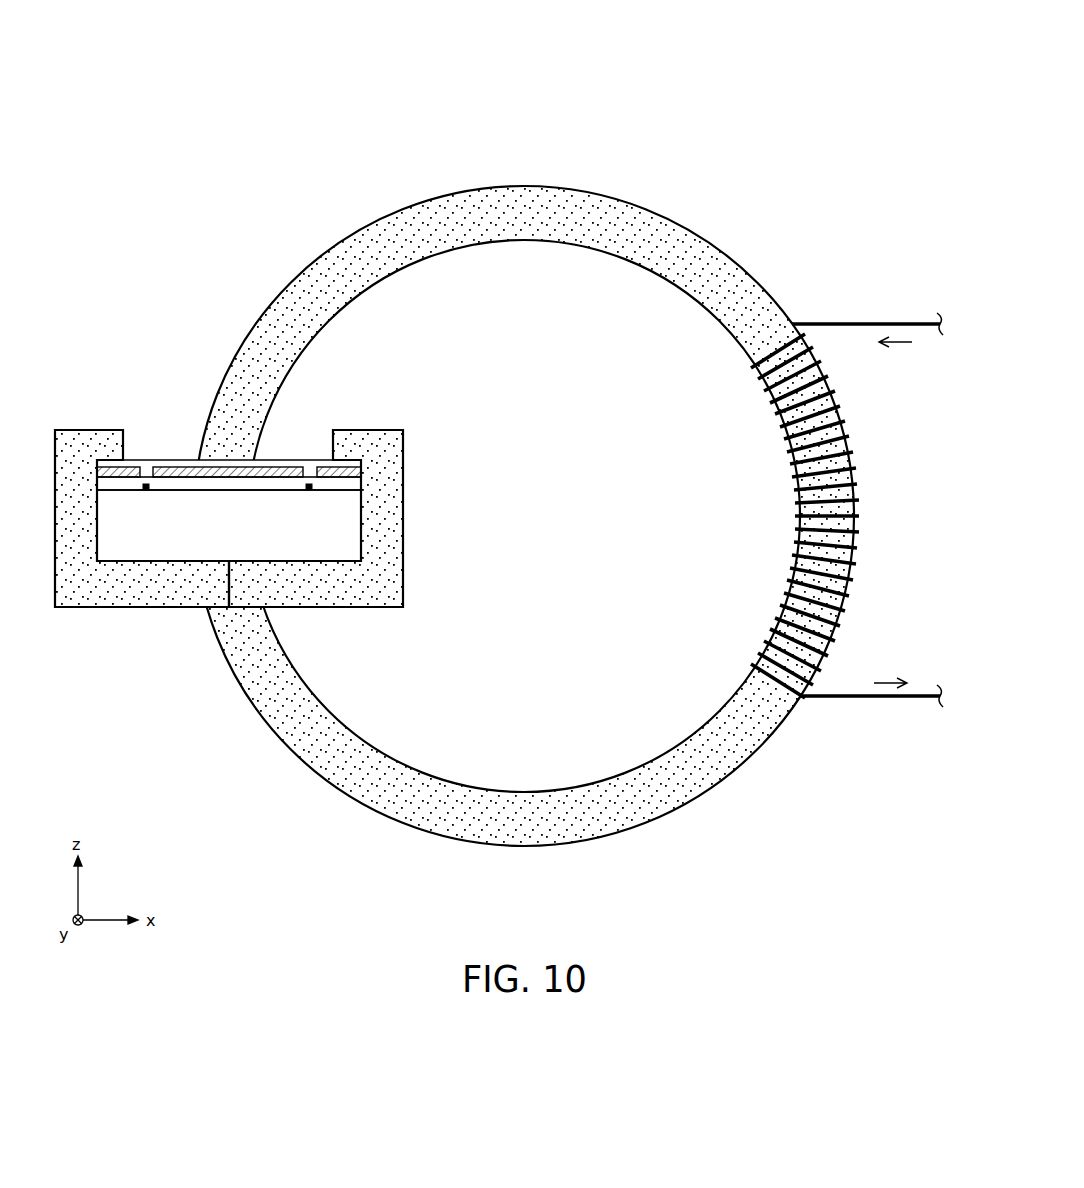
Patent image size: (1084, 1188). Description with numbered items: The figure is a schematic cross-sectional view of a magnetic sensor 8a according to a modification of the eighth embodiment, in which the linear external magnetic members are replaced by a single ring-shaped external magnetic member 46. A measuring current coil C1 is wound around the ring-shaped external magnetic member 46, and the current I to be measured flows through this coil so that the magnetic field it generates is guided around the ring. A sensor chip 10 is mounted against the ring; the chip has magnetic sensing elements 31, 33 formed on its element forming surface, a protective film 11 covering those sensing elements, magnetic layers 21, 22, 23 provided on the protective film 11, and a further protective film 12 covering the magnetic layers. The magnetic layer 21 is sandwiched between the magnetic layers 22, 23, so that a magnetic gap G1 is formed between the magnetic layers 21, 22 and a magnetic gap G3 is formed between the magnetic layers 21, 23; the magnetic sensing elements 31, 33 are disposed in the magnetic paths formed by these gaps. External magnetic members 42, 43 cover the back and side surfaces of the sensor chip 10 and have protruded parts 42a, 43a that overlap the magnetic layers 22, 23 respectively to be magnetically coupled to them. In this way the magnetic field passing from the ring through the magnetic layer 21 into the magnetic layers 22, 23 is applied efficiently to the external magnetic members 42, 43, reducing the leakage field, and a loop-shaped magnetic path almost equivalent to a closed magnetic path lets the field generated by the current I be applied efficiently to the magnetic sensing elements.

The magnetic sensor 8a is at (890, 36).
The sensor chip 10 is at (350, 527).
The protective film 11 is at (350, 483).
The protective film 12 is at (350, 463).
The magnetic layer 21 is at (176, 471).
The magnetic layer 22 is at (112, 472).
The magnetic layer 23 is at (335, 471).
The magnetic gap G1 is at (150, 446).
The magnetic gap G3 is at (312, 447).
The magnetic sensing element 31 is at (146, 491).
The magnetic sensing element 33 is at (309, 491).
The external magnetic member 42 is at (100, 585).
The protruded part 42a is at (100, 440).
The external magnetic member 43 is at (375, 585).
The protruded part 43a is at (383, 440).
The ring-shaped external magnetic member 46 is at (722, 778).
The measuring current coil C1 is at (845, 508).
The current to be measured I is at (893, 512).